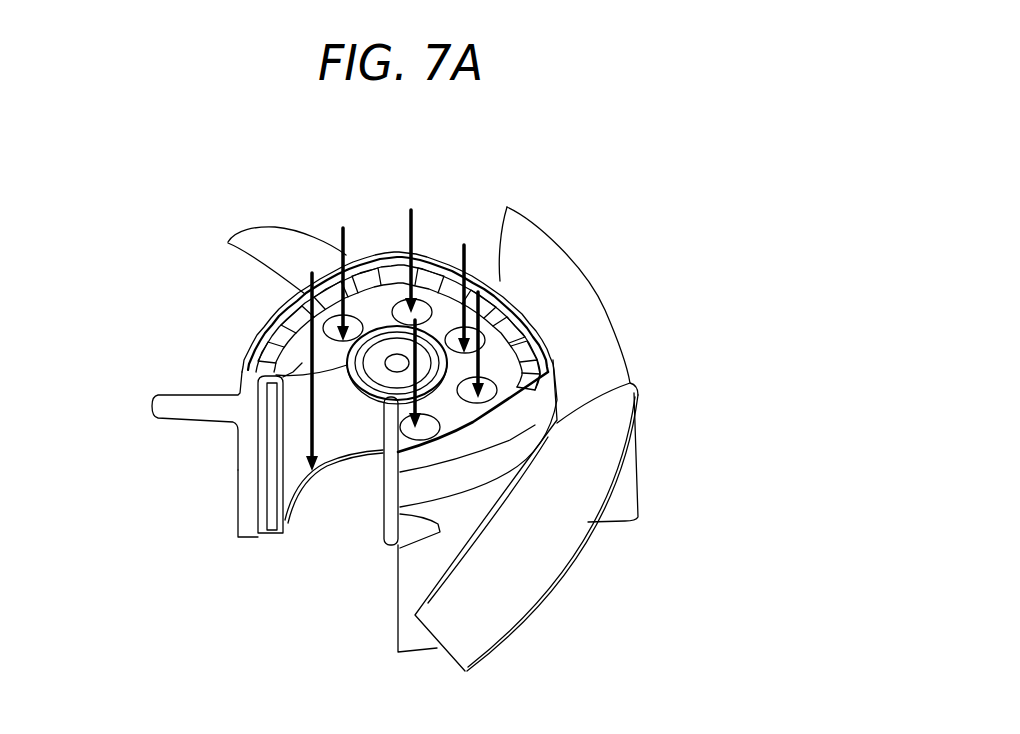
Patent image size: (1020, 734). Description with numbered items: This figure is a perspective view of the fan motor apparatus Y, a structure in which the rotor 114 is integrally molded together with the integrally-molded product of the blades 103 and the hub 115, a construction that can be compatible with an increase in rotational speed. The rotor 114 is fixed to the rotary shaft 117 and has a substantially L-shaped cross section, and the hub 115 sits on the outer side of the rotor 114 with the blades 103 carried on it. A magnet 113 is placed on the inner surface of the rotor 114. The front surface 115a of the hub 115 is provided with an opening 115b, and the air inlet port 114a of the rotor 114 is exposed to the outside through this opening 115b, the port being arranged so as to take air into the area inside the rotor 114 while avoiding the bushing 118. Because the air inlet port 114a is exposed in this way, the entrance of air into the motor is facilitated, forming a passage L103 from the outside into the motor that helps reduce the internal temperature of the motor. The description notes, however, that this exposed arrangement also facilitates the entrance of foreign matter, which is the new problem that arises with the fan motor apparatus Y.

The blades 103 is at (603, 340).
The passage L103 is at (340, 240).
The magnet 113 is at (274, 527).
The rotor 114 is at (240, 512).
The air inlet port 114a is at (390, 307).
The hub 115 is at (243, 482).
The front surface 115a is at (530, 322).
The opening 115b is at (440, 303).
The rotary shaft 117 is at (383, 547).
The bushing 118 is at (370, 404).
The fan motor apparatus Y is at (704, 256).